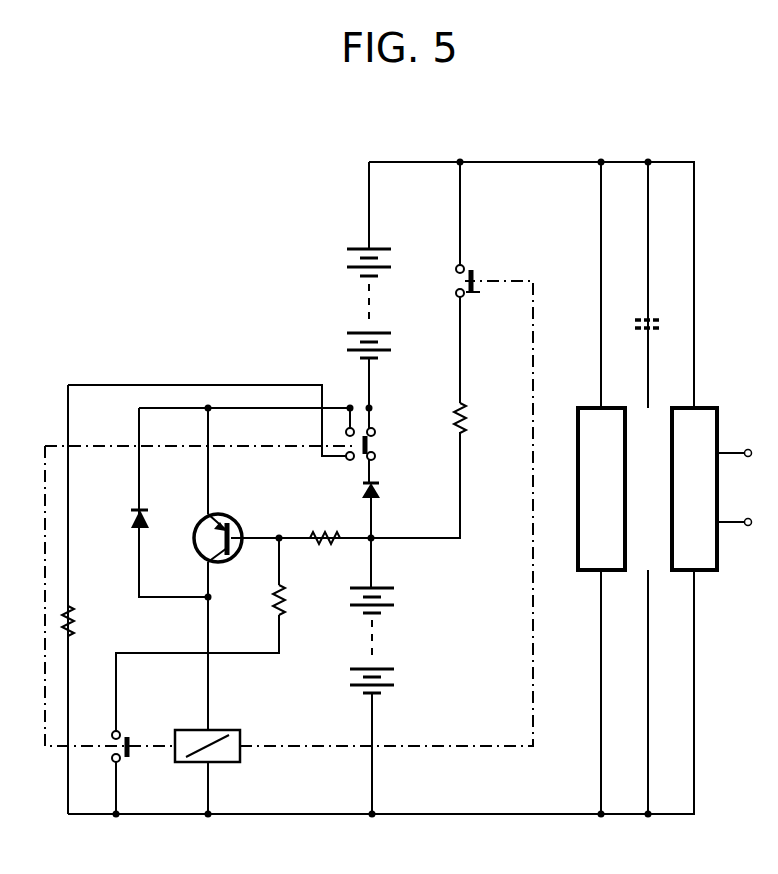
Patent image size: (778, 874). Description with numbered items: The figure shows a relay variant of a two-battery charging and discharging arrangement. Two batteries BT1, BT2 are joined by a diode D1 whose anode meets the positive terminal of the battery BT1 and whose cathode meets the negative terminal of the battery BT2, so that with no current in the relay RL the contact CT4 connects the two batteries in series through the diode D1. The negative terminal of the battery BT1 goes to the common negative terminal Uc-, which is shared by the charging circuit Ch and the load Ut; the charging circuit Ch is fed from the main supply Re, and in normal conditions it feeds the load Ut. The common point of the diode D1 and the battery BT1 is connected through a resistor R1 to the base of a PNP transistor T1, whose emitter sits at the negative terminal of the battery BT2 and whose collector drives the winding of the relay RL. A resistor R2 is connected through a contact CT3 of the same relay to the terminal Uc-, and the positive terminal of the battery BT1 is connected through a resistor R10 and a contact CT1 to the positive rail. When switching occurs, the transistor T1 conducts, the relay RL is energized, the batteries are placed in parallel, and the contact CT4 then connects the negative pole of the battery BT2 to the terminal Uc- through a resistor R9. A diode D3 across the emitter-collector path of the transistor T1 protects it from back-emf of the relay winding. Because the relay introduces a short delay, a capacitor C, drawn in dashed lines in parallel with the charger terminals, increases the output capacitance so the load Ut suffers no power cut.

The battery BT1 is at (380, 628).
The battery BT2 is at (363, 292).
The contact of the relay CT1 is at (469, 288).
The contact of the relay CT3 is at (128, 740).
The contact CT4 is at (375, 446).
The resistor R1 is at (313, 531).
The resistor R2 is at (275, 608).
The resistor R9 is at (73, 620).
The resistor R10 is at (466, 422).
The diode D1 is at (378, 498).
The diode D3 is at (134, 522).
The PNP transistor T1 is at (220, 524).
The relay RL is at (212, 748).
The capacitor C is at (660, 326).
The load Ut is at (604, 548).
The charging circuit Ch is at (699, 548).
The main supply Re is at (739, 488).
The negative terminal Uc- is at (591, 833).